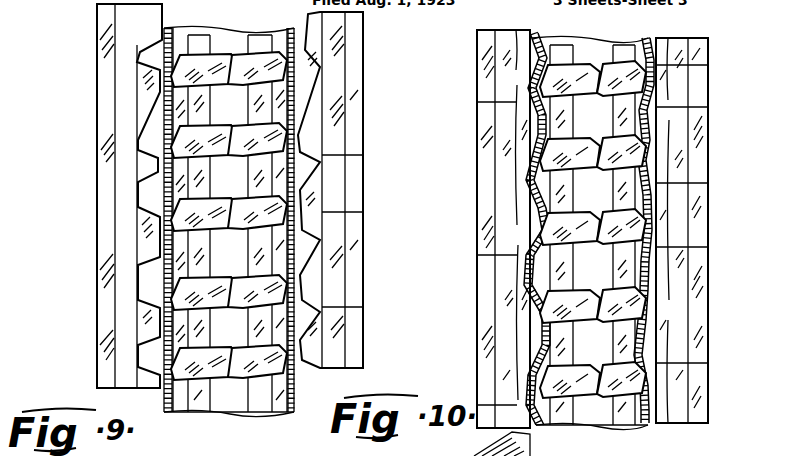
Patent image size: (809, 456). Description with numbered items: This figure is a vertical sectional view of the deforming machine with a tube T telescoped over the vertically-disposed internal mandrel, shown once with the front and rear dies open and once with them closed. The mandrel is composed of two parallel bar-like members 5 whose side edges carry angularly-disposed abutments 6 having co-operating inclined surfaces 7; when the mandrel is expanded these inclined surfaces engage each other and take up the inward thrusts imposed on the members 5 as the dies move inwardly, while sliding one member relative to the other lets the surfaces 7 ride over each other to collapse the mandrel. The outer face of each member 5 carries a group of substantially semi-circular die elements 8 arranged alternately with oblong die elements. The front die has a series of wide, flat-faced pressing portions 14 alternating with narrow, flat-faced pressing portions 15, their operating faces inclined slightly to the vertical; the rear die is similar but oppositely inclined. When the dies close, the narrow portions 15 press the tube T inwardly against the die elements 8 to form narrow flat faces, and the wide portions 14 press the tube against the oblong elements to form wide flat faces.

In FIG. 9, the bar-like member 5 is at (200, 42).
In FIG. 10, the bar-like member 5 is at (620, 46).
In FIG. 9, the abutment 6 is at (242, 360).
In FIG. 10, the abutment 6 is at (606, 78).
In FIG. 9, the inclined surface 7 is at (232, 214).
In FIG. 10, the inclined surface 7 is at (604, 104).
In FIG. 9, the die element 8 is at (172, 136).
In FIG. 10, the die element 8 is at (589, 229).
In FIG. 9, the wide flat-faced pressing portion 14 is at (143, 181).
In FIG. 10, the wide flat-faced pressing portion 14 is at (690, 107).
In FIG. 9, the narrow flat-faced pressing portion 15 is at (143, 251).
In FIG. 10, the narrow flat-faced pressing portion 15 is at (520, 150).
In FIG. 9, the tube T is at (296, 398).
In FIG. 10, the tube T is at (640, 424).